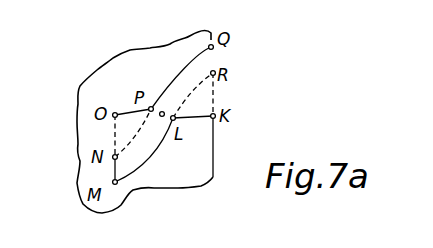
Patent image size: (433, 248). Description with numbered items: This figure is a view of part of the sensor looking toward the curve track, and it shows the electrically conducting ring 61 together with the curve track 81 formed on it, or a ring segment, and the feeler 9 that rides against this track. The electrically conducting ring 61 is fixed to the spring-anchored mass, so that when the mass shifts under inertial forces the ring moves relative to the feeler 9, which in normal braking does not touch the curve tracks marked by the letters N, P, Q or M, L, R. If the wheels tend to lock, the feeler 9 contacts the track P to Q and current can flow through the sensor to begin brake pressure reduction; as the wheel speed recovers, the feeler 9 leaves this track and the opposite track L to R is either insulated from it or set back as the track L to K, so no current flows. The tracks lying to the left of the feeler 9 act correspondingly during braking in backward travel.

The electrically conducting ring 61 is at (119, 72).
The curve track 81 is at (205, 63).
The feeler 9 is at (164, 114).